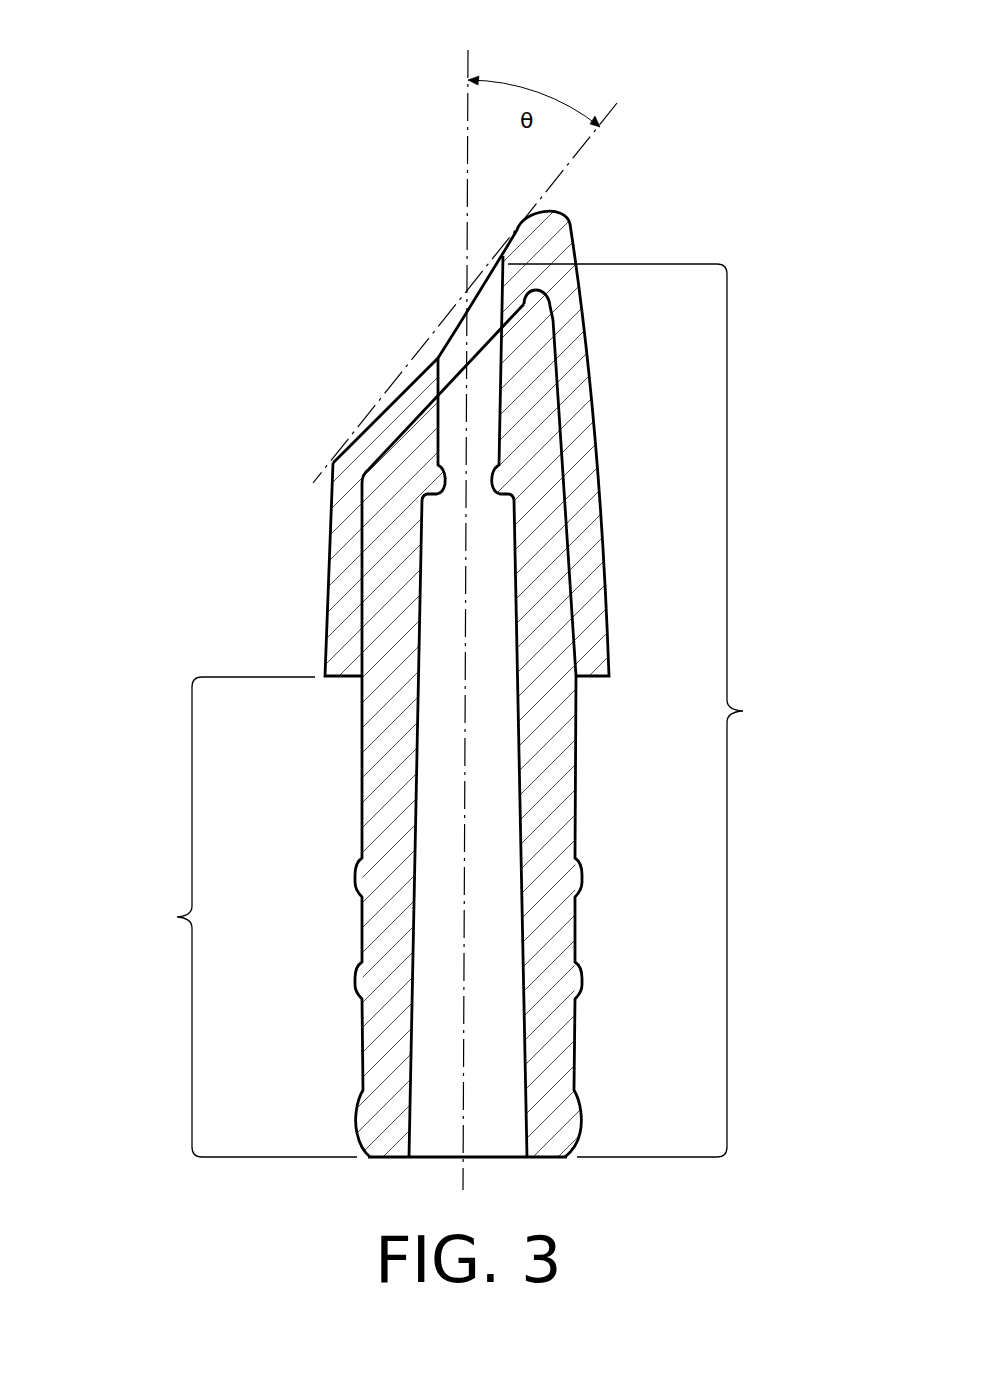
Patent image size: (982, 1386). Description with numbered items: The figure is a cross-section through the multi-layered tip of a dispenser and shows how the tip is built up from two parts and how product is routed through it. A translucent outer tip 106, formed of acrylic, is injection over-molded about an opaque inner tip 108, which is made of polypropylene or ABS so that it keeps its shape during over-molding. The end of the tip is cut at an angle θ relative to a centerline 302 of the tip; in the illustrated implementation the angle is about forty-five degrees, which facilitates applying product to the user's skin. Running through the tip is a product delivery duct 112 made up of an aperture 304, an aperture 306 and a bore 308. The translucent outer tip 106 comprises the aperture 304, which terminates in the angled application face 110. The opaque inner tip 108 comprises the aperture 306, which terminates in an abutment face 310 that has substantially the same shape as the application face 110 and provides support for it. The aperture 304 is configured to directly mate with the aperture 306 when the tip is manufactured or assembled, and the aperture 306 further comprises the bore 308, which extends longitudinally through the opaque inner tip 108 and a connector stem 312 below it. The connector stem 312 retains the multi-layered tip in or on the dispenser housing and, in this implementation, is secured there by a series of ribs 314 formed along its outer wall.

The centerline 302 is at (463, 45).
The aperture 304 is at (437, 358).
The translucent outer tip 106 is at (327, 605).
The application face 110 is at (410, 388).
The abutment face 310 is at (400, 441).
The aperture 306 is at (505, 328).
The opaque inner tip 108 is at (360, 567).
The bore 308 is at (515, 523).
The ribs 314 is at (360, 860).
The connector stem 312 is at (239, 917).
The product delivery duct 112 is at (653, 710).